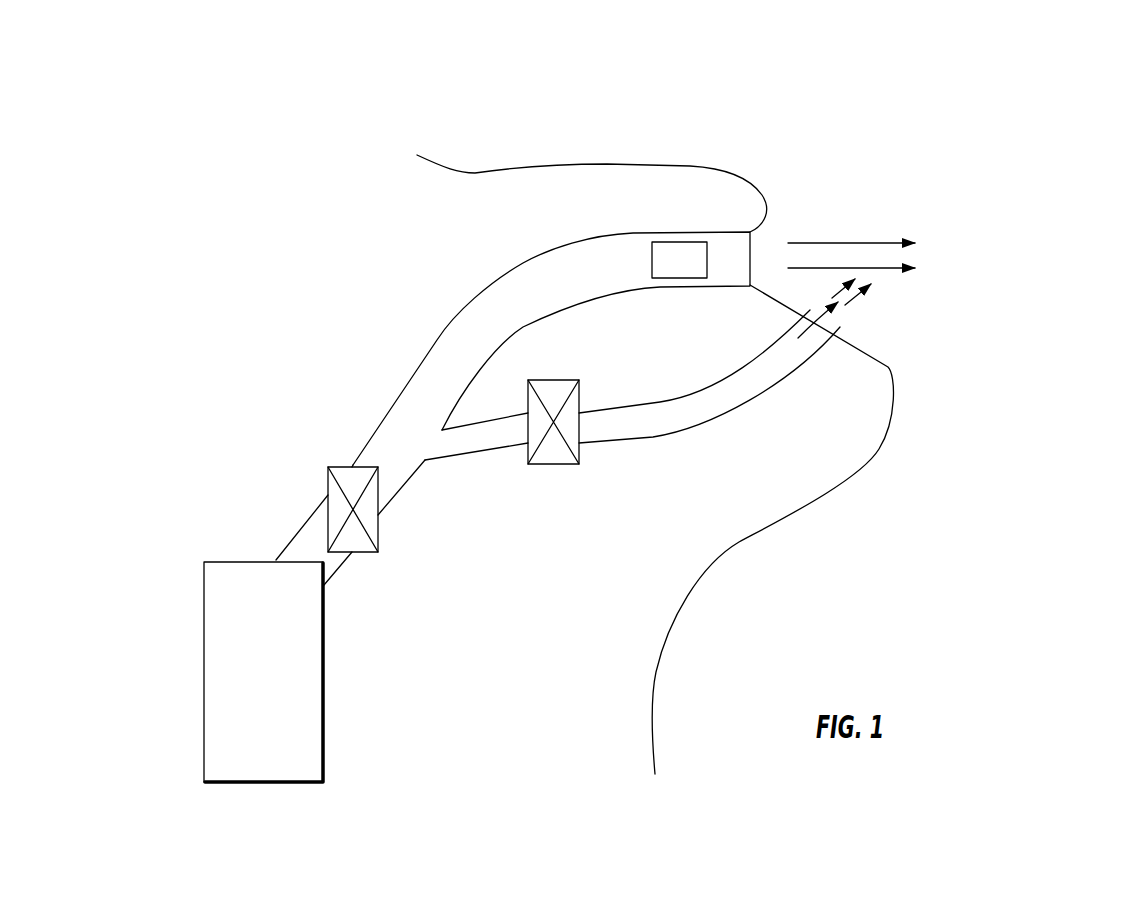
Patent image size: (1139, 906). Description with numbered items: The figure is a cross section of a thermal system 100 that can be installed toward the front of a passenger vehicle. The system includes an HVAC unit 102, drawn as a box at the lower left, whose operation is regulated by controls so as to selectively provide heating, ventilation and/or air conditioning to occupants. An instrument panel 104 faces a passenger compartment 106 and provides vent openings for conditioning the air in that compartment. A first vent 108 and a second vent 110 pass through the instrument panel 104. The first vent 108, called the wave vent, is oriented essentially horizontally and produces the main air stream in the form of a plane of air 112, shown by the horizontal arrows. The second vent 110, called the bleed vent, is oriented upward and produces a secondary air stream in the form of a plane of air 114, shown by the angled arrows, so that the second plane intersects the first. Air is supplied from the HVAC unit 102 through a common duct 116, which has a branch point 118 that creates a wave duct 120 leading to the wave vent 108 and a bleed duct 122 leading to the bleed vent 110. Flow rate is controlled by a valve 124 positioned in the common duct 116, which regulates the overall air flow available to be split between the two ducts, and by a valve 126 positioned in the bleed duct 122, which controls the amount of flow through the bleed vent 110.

The thermal system 100 is at (1035, 74).
The HVAC unit 102 is at (325, 707).
The instrument panel 104 is at (740, 175).
The passenger compartment 106 is at (1003, 224).
The first vent 108 is at (768, 256).
The second vent 110 is at (810, 312).
The plane of air 112 is at (837, 242).
The plane of air 114 is at (850, 297).
The common duct 116 is at (333, 570).
The branch point 118 is at (425, 462).
The wave duct 120 is at (478, 307).
The bleed duct 122 is at (633, 441).
The valve 124 is at (363, 470).
The valve 126 is at (567, 380).